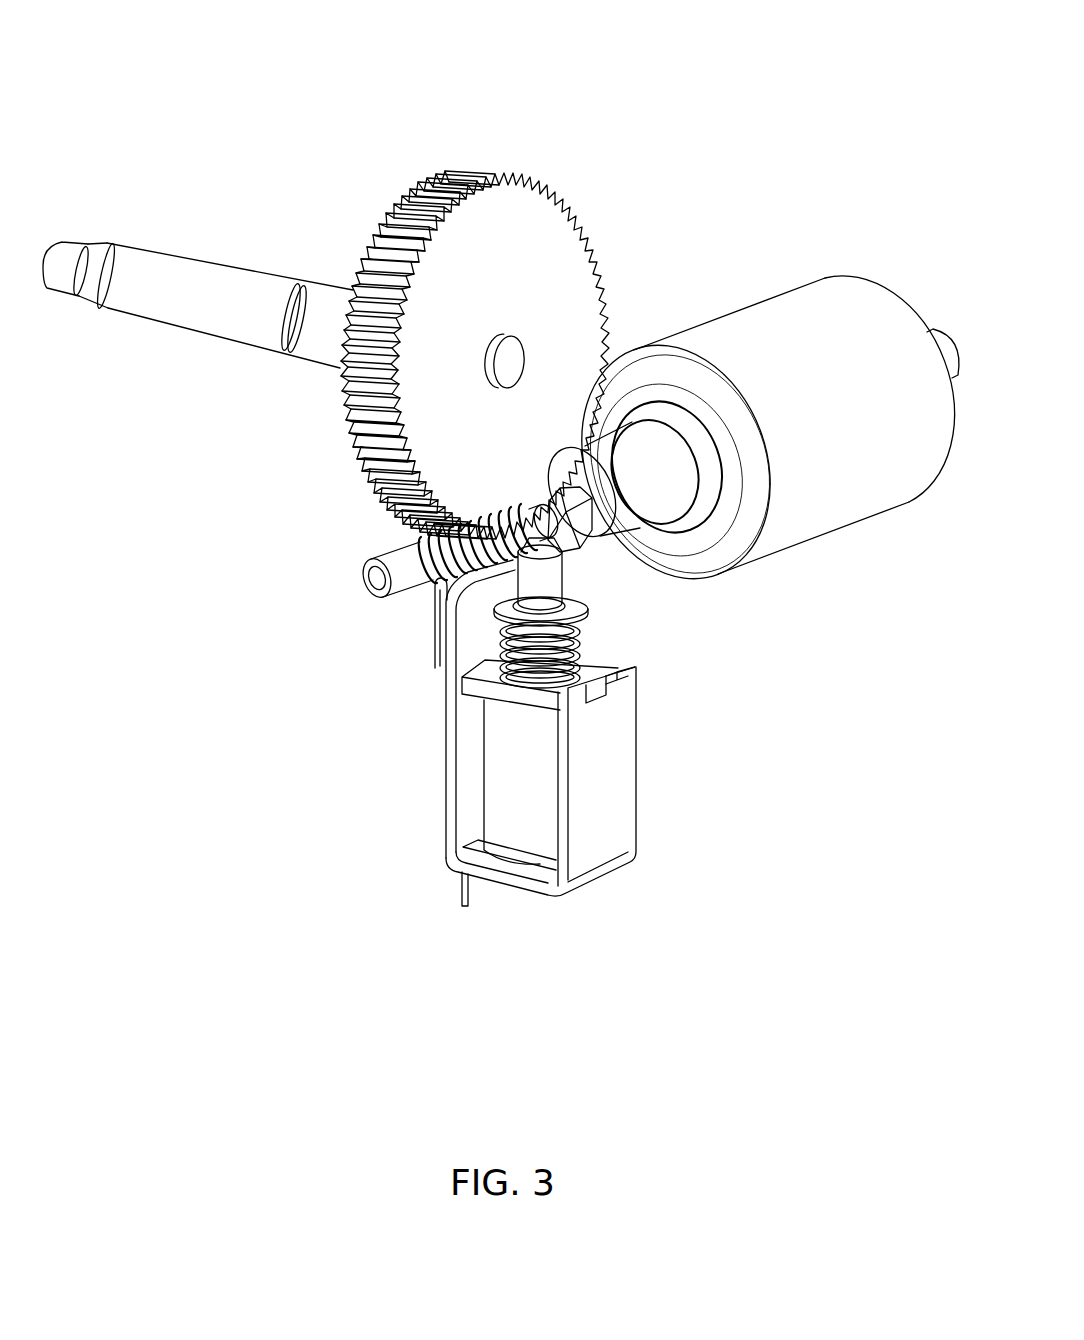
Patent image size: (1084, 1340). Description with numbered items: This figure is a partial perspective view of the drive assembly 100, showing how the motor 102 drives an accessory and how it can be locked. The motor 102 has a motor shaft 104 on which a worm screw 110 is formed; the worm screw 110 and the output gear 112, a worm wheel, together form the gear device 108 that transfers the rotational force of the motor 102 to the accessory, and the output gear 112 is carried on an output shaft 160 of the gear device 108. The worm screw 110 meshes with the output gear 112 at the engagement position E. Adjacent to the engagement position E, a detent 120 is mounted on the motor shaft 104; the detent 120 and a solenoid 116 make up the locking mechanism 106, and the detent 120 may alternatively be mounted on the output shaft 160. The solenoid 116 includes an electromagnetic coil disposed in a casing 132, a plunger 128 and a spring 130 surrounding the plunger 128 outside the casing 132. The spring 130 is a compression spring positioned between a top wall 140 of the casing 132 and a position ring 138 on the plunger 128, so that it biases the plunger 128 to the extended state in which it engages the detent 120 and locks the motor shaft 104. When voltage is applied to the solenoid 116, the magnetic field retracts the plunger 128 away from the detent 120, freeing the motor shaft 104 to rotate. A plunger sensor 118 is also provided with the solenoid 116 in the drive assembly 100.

The drive assembly 100 is at (725, 50).
The motor 102 is at (768, 300).
The motor shaft 104 is at (408, 577).
The locking mechanism 106 is at (606, 548).
The gear device 108 is at (342, 488).
The worm screw 110 is at (436, 538).
The output gear 112 is at (525, 215).
The solenoid 116 is at (612, 667).
The plunger sensor 118 is at (433, 597).
The detent 120 is at (586, 509).
The plunger 128 is at (553, 585).
The spring 130 is at (470, 677).
The casing 132 is at (596, 886).
The position ring 138 is at (587, 608).
The top wall 140 is at (630, 677).
The output shaft 160 is at (203, 288).
The engagement position E is at (498, 535).